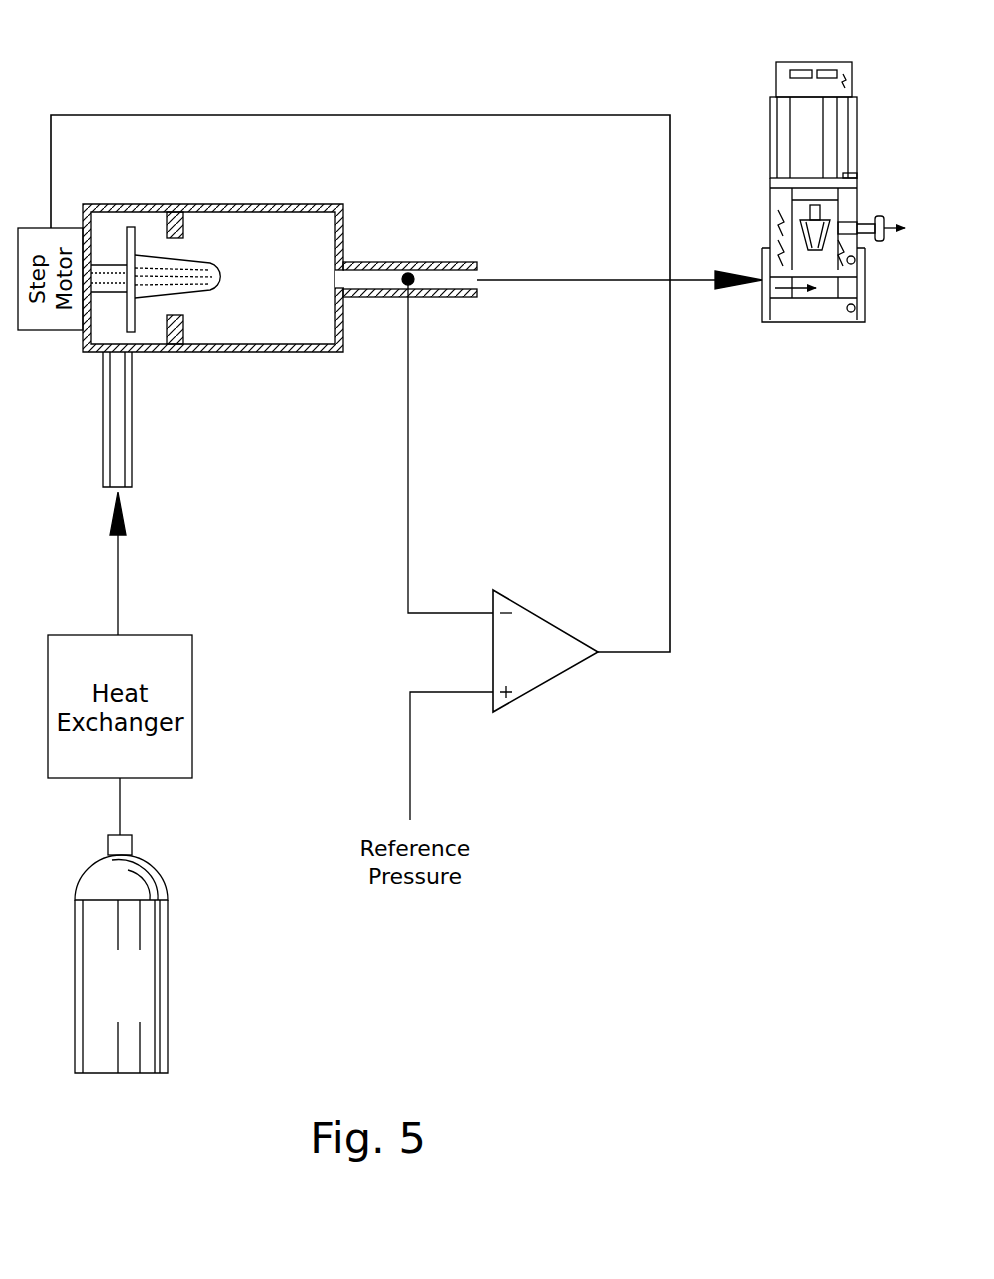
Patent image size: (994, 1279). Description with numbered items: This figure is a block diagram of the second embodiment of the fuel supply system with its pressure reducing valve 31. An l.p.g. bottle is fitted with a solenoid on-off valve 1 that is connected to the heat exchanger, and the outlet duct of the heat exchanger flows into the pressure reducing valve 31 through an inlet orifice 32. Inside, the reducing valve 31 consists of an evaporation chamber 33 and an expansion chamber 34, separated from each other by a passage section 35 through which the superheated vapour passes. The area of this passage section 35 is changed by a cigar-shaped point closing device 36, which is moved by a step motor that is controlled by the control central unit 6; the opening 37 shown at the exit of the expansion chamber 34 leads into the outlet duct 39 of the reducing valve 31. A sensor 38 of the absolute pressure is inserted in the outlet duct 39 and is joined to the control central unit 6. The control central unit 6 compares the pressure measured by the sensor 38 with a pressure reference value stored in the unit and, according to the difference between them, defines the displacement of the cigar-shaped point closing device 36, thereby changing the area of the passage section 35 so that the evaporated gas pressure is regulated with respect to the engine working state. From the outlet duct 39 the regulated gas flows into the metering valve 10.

The solenoid on-off valve 1 is at (128, 847).
The control central unit 6 is at (523, 668).
The metering valve 10 is at (803, 308).
The pressure reducing valve 31 is at (110, 190).
The inlet orifice 32 is at (115, 347).
The evaporation chamber 33 is at (152, 237).
The expansion chamber 34 is at (288, 322).
The passage section 35 is at (181, 240).
The cigar-shaped point closing device 36 is at (184, 272).
The outlet opening 37 is at (328, 277).
The absolute pressure sensor 38 is at (411, 261).
The outlet duct 39 is at (463, 261).